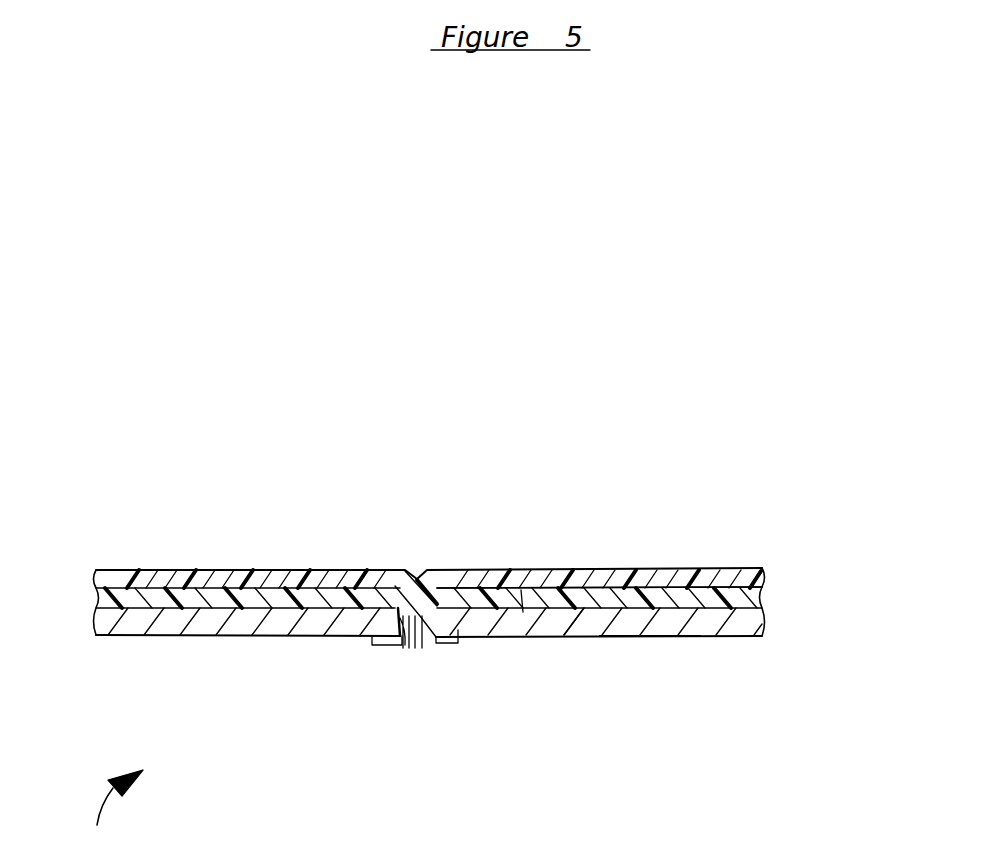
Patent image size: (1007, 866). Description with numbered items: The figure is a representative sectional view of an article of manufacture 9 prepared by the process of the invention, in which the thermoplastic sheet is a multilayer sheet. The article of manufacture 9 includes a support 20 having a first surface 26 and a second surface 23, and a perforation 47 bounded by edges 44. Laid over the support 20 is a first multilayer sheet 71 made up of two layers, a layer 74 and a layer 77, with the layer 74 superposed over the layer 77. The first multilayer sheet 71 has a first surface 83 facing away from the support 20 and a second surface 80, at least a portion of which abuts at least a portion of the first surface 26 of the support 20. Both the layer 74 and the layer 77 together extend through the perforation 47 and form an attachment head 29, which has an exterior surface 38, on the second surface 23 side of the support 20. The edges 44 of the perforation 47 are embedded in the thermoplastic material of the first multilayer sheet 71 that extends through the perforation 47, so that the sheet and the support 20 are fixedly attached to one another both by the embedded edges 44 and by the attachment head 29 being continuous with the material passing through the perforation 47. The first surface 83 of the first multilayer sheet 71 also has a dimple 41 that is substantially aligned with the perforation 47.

The article of manufacture 9 is at (120, 810).
The support 20 is at (113, 627).
The second surface 23 is at (645, 637).
The first surface 26 is at (590, 606).
The attachment head 29 is at (425, 646).
The exterior surface 38 is at (376, 645).
The dimple 41 is at (425, 560).
The edges 44 is at (403, 648).
The perforation 47 is at (409, 648).
The first multilayer sheet 71 is at (448, 606).
The layer 74 is at (732, 575).
The layer 77 is at (656, 597).
The second surface 80 is at (522, 615).
The first surface 83 is at (565, 590).